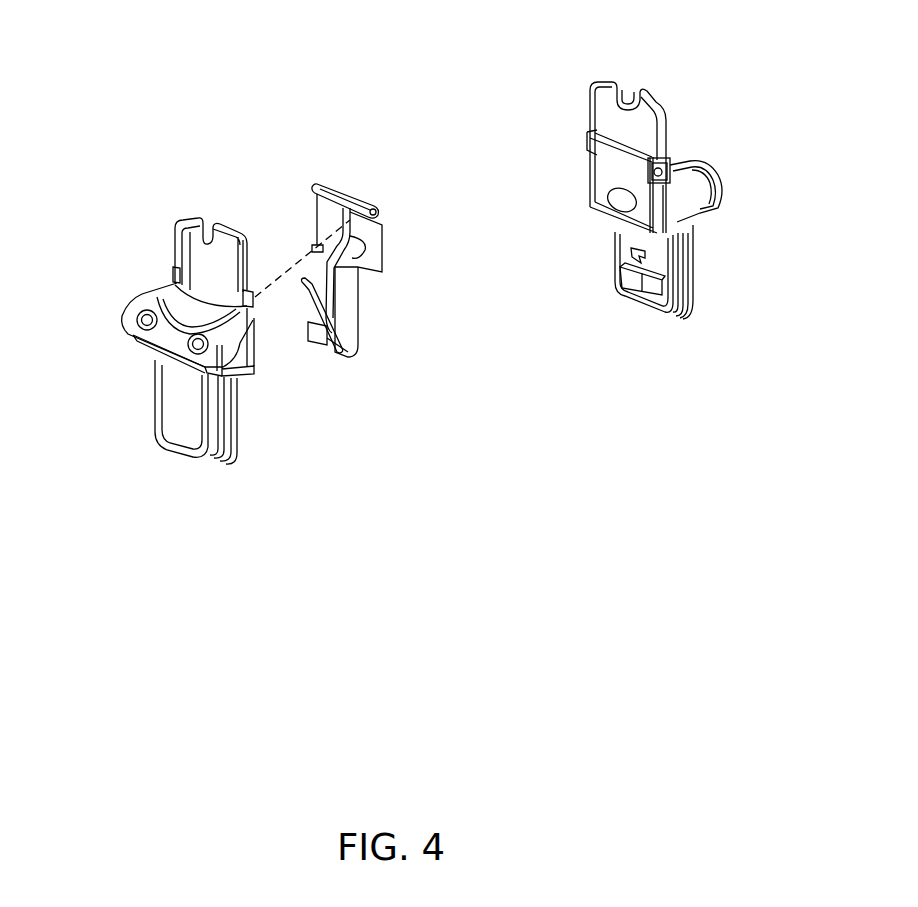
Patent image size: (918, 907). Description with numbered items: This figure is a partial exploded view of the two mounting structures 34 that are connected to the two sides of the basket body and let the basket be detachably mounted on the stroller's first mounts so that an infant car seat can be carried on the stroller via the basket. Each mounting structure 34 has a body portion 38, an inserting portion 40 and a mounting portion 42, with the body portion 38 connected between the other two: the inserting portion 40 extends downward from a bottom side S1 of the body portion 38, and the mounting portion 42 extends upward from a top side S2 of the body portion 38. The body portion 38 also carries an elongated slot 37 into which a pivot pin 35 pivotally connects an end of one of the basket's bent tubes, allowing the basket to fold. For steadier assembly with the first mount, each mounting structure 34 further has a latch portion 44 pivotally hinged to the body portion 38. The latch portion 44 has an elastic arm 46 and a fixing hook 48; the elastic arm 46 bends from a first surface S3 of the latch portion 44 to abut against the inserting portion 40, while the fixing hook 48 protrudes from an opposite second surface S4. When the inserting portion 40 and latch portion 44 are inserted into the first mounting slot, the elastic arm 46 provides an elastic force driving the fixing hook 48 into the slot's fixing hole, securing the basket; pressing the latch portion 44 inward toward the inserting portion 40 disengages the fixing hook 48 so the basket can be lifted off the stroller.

The mounting structure 34 is at (322, 131).
The pivot pin 35 is at (140, 319).
The elongated slot 37 is at (218, 308).
The body portion 38 is at (172, 348).
The inserting portion 40 is at (180, 418).
The mounting portion 42 is at (192, 252).
The latch portion 44 is at (405, 213).
The elastic arm 46 is at (307, 297).
The fixing hook 48 is at (633, 257).
The bottom side S1 is at (170, 367).
The top side S2 is at (207, 242).
The first surface S3 is at (347, 303).
The second surface S4 is at (650, 272).